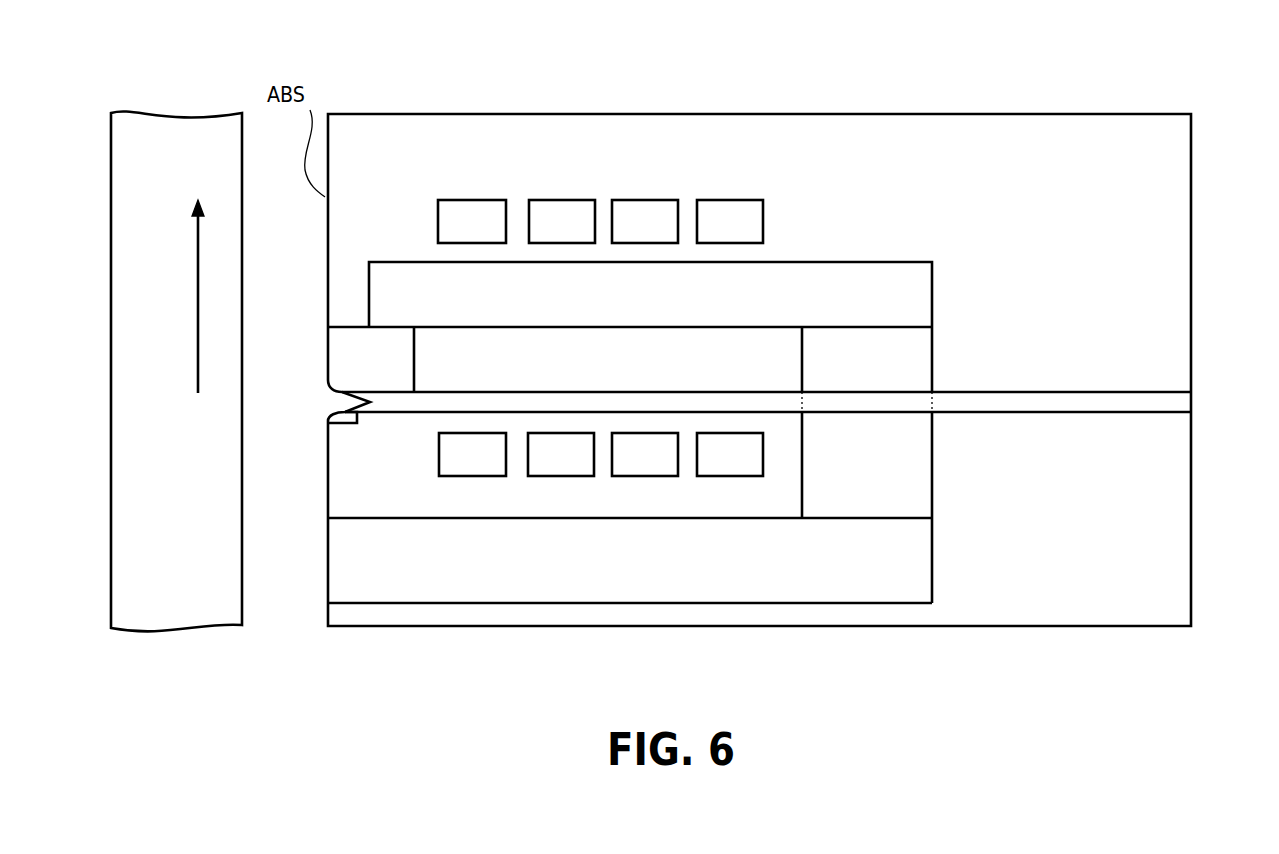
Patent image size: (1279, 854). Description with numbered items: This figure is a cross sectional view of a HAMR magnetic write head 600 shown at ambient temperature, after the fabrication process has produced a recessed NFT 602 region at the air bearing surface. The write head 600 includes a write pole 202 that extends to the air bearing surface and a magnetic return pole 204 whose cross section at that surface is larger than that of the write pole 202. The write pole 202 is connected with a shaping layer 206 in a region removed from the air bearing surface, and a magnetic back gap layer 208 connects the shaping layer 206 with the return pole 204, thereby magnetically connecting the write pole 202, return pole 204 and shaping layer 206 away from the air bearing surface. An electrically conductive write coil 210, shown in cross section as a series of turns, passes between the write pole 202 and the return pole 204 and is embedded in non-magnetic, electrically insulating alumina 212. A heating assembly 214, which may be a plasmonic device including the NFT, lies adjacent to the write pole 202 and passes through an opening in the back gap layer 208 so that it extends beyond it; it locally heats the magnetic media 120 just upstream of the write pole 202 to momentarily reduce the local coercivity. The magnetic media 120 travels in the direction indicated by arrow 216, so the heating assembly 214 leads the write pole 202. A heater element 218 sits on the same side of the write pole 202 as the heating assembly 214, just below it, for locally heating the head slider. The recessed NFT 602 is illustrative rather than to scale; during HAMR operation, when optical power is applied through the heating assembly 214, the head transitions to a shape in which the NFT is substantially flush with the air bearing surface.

The magnetic media 120 is at (158, 131).
The HAMR magnetic write head 600 is at (707, 114).
The recessed NFT 602 is at (333, 402).
The write pole 202 is at (393, 356).
The magnetic return pole 204 is at (649, 569).
The shaping layer 206 is at (578, 304).
The magnetic back gap layer 208 is at (877, 372).
The write coil 210 is at (489, 232).
The alumina 212 is at (982, 204).
The heating assembly 214 is at (1170, 402).
The arrow 216 is at (197, 303).
The heater element 218 is at (345, 418).